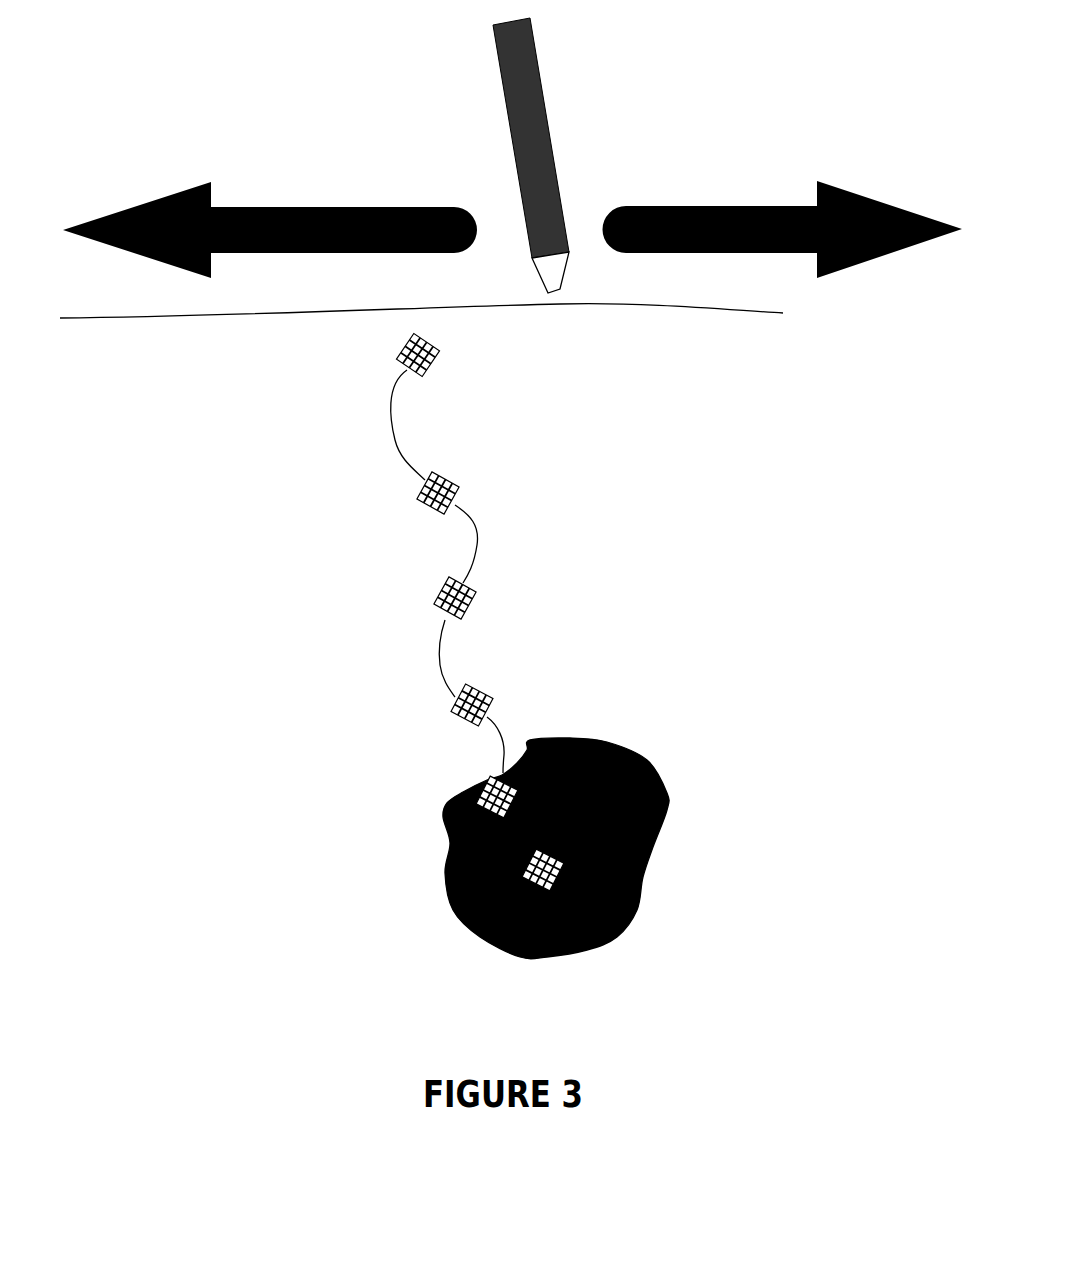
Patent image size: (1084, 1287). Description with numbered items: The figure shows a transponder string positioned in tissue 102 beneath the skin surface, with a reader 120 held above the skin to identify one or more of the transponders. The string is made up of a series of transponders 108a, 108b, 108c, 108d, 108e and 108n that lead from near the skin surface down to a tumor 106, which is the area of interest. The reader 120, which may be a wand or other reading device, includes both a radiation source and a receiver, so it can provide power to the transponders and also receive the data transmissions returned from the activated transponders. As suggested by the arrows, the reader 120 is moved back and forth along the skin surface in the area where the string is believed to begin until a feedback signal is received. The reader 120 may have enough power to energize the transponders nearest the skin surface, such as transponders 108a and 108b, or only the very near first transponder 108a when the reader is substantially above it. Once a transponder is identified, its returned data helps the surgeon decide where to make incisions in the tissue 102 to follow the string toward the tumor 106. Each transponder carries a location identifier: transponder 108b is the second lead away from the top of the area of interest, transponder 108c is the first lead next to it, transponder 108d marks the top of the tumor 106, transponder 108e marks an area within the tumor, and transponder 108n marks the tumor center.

The reader 120 is at (573, 192).
The tissue 102 is at (698, 519).
The tumor 106 is at (642, 752).
The first transponder 108a is at (449, 354).
The transponder 108b is at (470, 493).
The transponder 108c is at (487, 598).
The transponder 108d is at (503, 703).
The transponder 108e is at (475, 793).
The transponder 108n is at (563, 863).